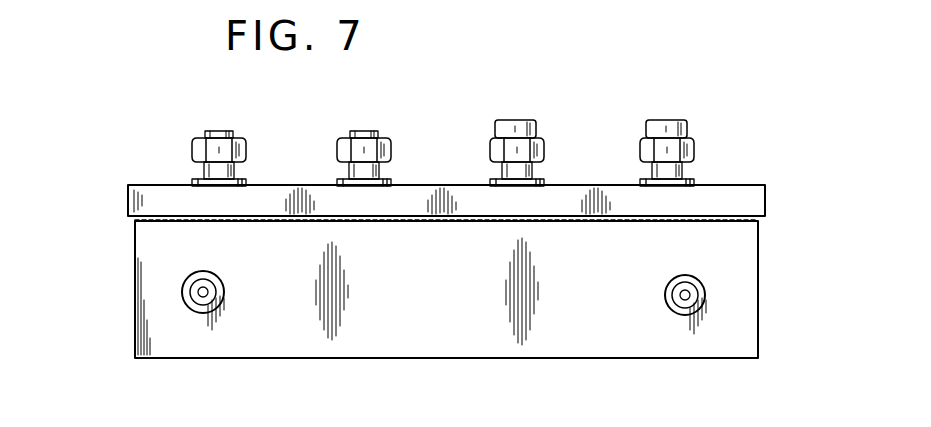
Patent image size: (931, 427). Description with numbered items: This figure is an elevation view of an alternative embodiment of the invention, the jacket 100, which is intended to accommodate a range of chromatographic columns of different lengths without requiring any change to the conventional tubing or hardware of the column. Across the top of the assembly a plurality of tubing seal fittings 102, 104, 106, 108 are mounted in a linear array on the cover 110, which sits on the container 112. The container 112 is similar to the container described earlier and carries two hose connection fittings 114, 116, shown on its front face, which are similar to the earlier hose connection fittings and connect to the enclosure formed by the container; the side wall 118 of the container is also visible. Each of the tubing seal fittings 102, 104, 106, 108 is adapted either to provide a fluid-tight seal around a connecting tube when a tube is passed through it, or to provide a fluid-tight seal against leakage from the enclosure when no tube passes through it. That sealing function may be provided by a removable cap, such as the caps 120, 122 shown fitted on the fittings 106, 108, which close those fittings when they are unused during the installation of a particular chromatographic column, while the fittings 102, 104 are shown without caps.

The jacket 100 is at (794, 233).
The tubing seal fitting 102 is at (203, 168).
The tubing seal fitting 104 is at (348, 168).
The tubing seal fitting 106 is at (497, 170).
The tubing seal fitting 108 is at (684, 170).
The top plate 110 is at (128, 200).
The container 112 is at (268, 360).
The hose connection fitting 114 is at (226, 303).
The hose connection fitting 116 is at (666, 297).
The side wall 118 is at (133, 292).
The cap 120 is at (560, 100).
The cap 122 is at (684, 120).